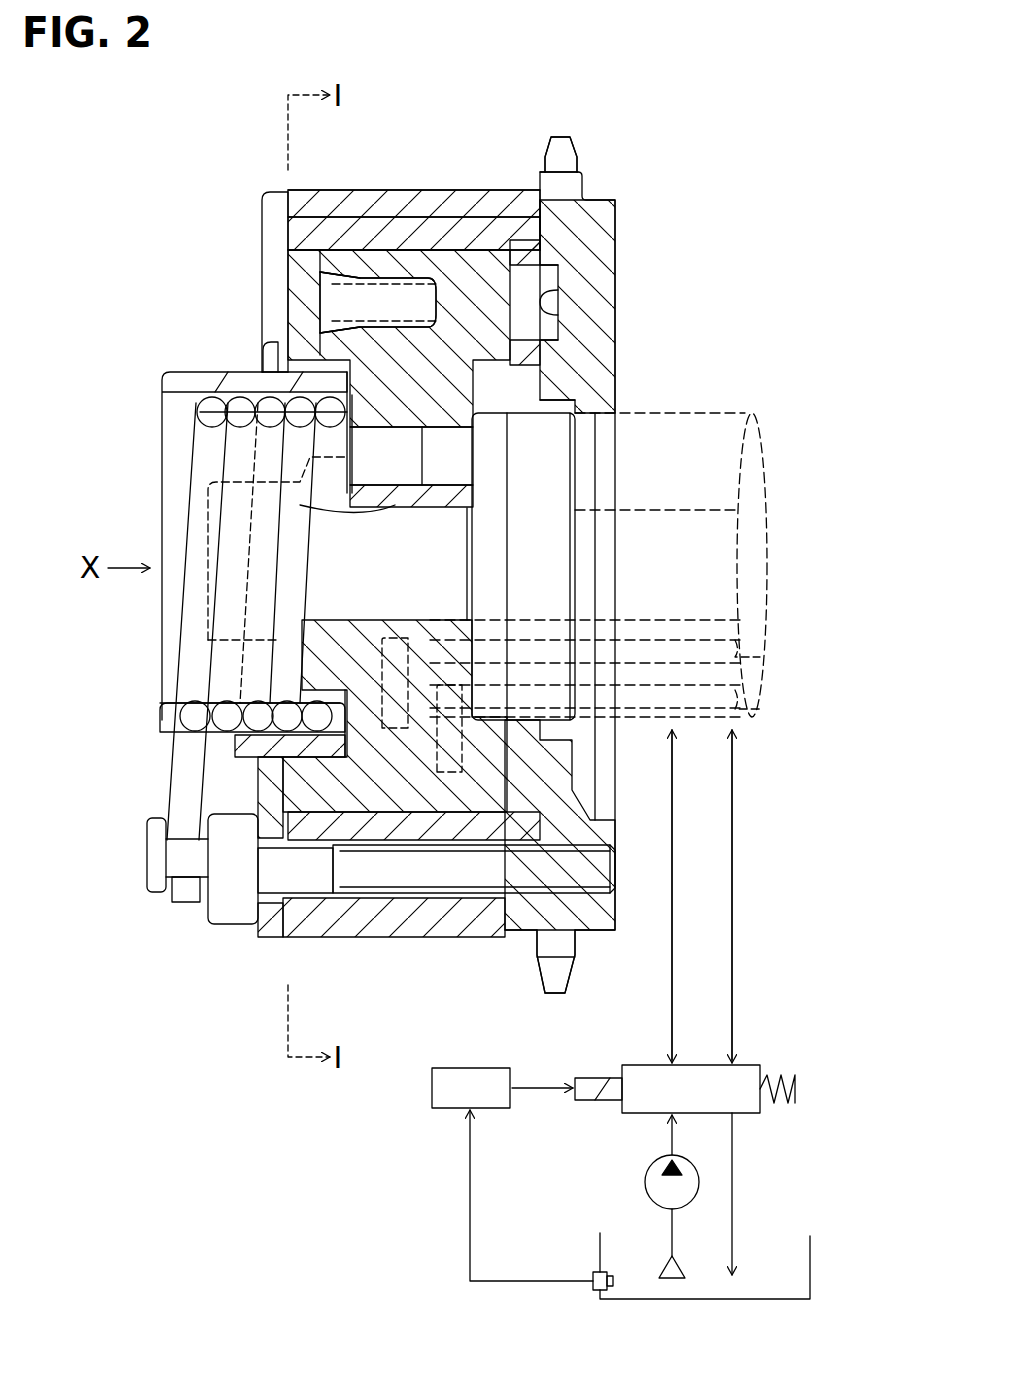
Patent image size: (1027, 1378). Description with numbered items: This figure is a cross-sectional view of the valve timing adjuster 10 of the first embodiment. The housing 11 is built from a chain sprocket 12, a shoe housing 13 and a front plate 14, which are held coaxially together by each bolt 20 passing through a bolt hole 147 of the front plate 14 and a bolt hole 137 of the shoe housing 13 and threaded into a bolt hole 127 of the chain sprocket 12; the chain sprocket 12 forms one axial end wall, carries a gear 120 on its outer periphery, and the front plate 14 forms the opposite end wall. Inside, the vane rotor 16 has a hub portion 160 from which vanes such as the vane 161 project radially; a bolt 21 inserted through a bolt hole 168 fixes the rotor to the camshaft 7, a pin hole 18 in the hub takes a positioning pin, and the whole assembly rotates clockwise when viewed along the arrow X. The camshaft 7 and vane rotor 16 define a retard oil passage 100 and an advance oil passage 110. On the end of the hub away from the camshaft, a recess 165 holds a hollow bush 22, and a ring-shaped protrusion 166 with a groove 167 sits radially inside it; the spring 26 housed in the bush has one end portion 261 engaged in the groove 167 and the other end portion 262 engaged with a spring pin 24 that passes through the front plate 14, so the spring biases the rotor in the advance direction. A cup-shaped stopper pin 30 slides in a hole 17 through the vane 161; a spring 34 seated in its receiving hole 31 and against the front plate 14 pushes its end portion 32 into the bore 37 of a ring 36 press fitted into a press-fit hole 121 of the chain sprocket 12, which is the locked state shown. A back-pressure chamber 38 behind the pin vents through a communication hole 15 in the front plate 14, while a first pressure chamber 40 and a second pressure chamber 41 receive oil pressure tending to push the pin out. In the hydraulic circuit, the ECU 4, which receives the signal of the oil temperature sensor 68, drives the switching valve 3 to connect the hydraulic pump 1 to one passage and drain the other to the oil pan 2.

The hydraulic pump 1 is at (645, 1182).
The oil pan 2 is at (812, 1245).
The switching valve 3 is at (752, 1065).
The electronic control device (ECU) 4 is at (480, 1068).
The camshaft 7 is at (740, 410).
The valve timing adjuster 10 is at (612, 146).
The housing 11 is at (492, 188).
The chain sprocket 12 is at (618, 235).
The shoe housing 13 is at (375, 190).
The front plate 14 is at (262, 232).
The communication hole 15 is at (266, 360).
The vane rotor 16 is at (645, 574).
The hole 17 is at (525, 343).
The pin hole 18 is at (473, 445).
The bolt 20 is at (207, 913).
The bolt 21 is at (208, 600).
The bush 22 is at (162, 380).
The spring pin 24 is at (145, 857).
The spring 26 is at (185, 634).
The stopper pin 30 is at (455, 250).
The receiving hole 31 is at (355, 293).
The end portion 32 is at (542, 336).
The spring 34 is at (322, 273).
The ring 36 is at (524, 240).
The bore 37 is at (545, 276).
The back-pressure chamber 38 is at (308, 335).
The first pressure chamber 40 is at (548, 302).
The second pressure chamber 41 is at (420, 250).
The oil temperature sensor 68 is at (593, 1273).
The retard oil passage 100 is at (760, 657).
The advance oil passage 110 is at (760, 709).
The gear 120 is at (560, 137).
The press-fit hole 121 is at (540, 250).
The bolt hole 127 is at (525, 890).
The bolt hole 137 is at (378, 887).
The bolt hole 147 is at (259, 887).
The hub portion 160 is at (473, 632).
The vane 161 is at (334, 190).
The recess 165 is at (200, 412).
The protrusion 166 is at (295, 665).
The groove 167 is at (300, 453).
The bolt hole 168 is at (320, 515).
The one end portion 261 is at (300, 470).
The other end portion 262 is at (170, 887).